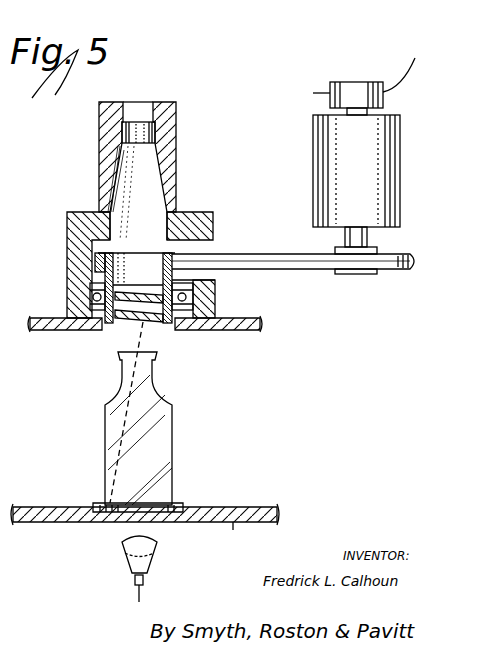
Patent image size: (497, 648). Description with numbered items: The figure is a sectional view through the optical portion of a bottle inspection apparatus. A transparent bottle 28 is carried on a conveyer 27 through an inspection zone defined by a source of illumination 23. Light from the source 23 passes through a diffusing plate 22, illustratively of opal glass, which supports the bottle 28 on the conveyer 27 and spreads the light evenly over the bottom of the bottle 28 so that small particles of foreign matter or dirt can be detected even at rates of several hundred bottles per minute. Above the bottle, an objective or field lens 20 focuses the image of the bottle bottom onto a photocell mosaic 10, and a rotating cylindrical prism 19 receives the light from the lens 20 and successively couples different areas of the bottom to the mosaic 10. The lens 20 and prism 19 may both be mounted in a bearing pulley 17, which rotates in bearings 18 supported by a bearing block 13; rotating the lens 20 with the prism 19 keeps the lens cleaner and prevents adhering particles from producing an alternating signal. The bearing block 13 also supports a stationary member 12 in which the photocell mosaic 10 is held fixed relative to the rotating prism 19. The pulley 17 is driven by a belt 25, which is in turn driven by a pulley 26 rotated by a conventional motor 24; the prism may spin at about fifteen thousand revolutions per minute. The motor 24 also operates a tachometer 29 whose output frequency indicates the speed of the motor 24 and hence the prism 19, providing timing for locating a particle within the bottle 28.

The photocell mosaic 10 is at (135, 125).
The stationary member 12 is at (170, 130).
The bearing block 13 is at (200, 228).
The bearing pulley 17 is at (100, 285).
The bearings 18 is at (93, 297).
The rotating cylindrical prism 19 is at (115, 322).
The objective or field lens 20 is at (143, 322).
The diffusing plate 22 is at (183, 505).
The source of illumination 23 is at (148, 562).
The motor 24 is at (335, 143).
The belt 25 is at (215, 255).
The pulley 26 is at (390, 262).
The conveyer 27 is at (238, 524).
The bottle 28 is at (160, 432).
The tachometer 29 is at (345, 93).